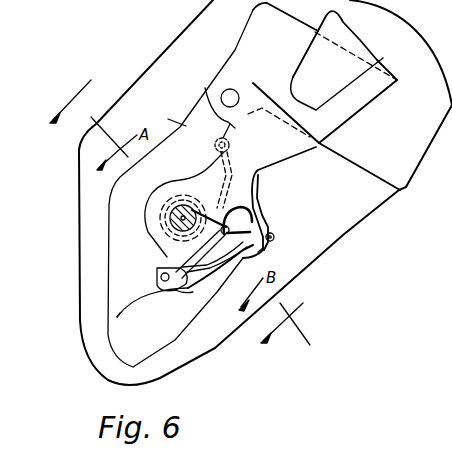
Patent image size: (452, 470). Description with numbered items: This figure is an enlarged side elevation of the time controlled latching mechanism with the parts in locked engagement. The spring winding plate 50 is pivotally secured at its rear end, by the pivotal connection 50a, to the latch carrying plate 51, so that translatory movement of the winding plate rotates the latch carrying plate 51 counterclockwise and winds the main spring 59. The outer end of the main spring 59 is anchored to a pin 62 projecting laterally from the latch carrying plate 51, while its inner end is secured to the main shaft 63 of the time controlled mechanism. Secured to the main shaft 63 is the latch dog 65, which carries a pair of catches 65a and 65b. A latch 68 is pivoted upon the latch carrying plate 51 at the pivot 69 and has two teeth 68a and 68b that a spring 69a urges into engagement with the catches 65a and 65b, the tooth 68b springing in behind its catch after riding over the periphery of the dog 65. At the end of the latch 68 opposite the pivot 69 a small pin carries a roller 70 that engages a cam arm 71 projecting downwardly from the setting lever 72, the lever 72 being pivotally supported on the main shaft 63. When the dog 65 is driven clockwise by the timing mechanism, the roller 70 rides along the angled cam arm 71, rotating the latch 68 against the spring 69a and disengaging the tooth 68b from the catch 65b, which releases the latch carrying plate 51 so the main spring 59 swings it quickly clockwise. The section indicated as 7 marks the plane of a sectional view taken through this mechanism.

The spring winding plate 50 is at (248, 31).
The pivotal connection 50a is at (229, 98).
The latch carrying plate 51 is at (169, 115).
The main spring 59 is at (165, 208).
The pin 62 is at (230, 147).
The main shaft 63 is at (183, 218).
The latch dog 65 is at (175, 263).
The catch 65a is at (158, 270).
The catch 65b is at (226, 223).
The latch 68 is at (214, 278).
The tooth 68a is at (170, 304).
The tooth 68b is at (252, 232).
The pivot 69 is at (156, 281).
The spring 69a is at (130, 325).
The roller 70 is at (275, 237).
The cam arm 71 is at (264, 246).
The setting lever 72 is at (323, 130).
The section line 7 is at (181, 207).